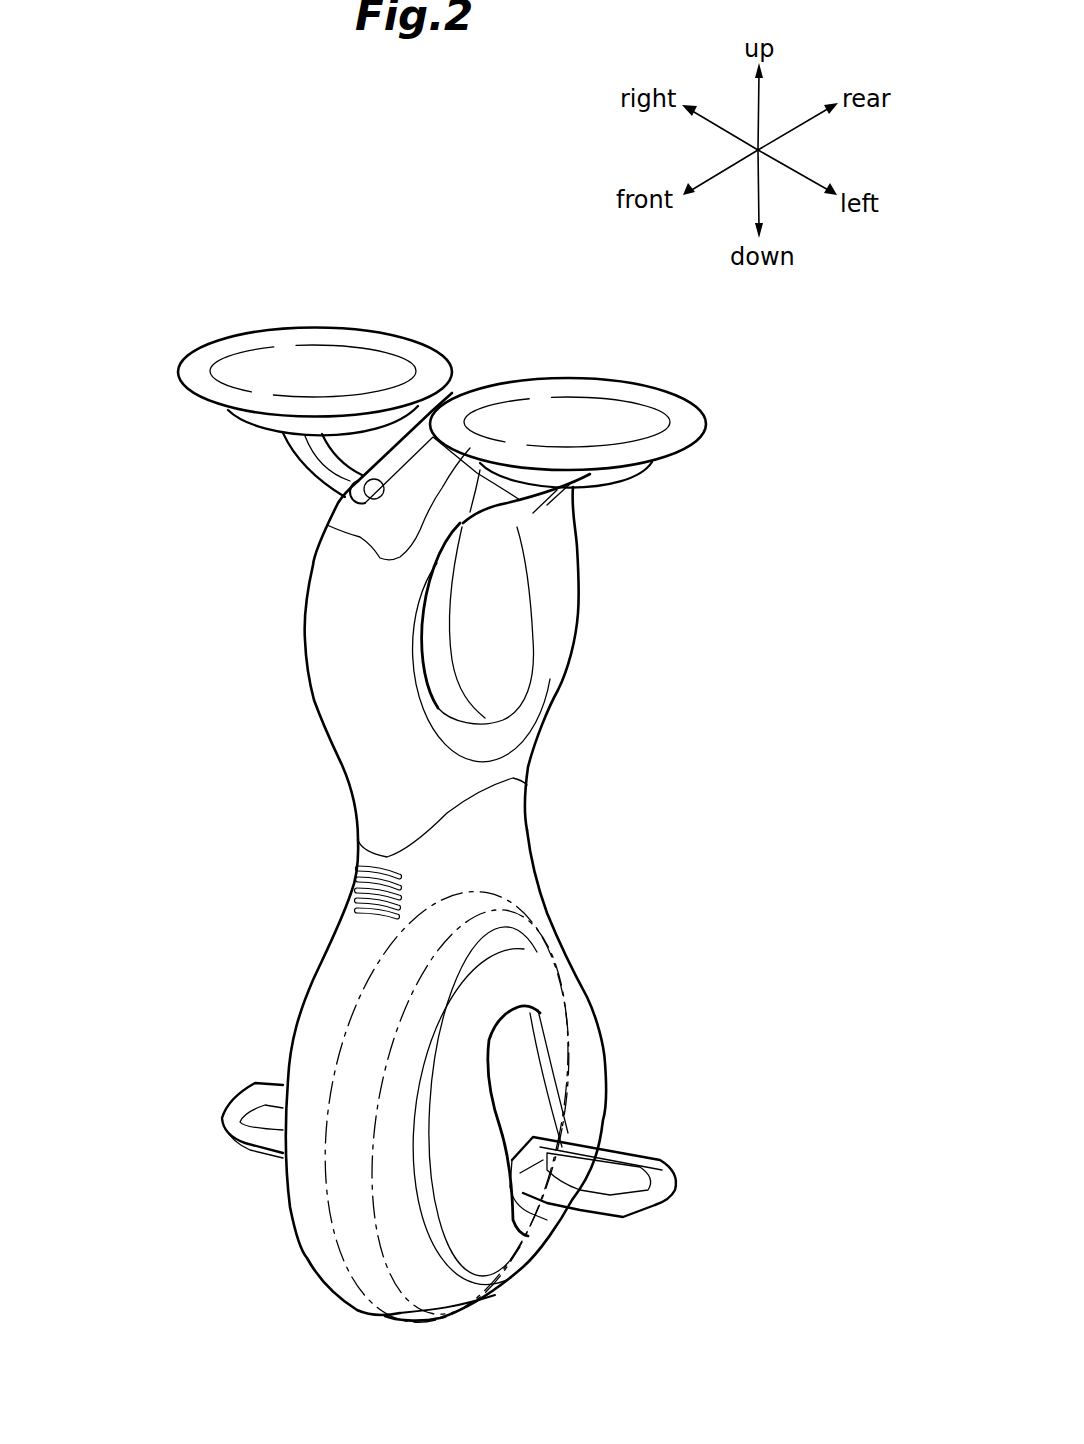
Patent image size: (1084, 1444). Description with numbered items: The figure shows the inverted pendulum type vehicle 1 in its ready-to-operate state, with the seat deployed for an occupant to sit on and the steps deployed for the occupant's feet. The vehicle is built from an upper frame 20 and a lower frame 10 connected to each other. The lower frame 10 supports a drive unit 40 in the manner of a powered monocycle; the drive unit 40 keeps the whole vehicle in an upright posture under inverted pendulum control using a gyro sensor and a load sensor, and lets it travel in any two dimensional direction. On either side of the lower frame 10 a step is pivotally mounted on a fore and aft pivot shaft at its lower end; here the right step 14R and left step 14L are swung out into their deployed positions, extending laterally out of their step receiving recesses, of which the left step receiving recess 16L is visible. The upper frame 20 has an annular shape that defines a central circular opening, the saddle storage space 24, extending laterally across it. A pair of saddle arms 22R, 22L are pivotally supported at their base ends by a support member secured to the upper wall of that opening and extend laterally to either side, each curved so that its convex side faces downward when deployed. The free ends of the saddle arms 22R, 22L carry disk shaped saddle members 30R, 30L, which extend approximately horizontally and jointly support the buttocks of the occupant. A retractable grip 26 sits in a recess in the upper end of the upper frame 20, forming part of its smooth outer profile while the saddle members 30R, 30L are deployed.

The inverted pendulum type vehicle 1 is at (434, 766).
The lower frame 10 is at (407, 1075).
The step 14R is at (230, 1113).
The step 14L is at (668, 1172).
The step receiving recess 16L is at (552, 1083).
The upper frame 20 is at (417, 617).
The saddle arm 22R is at (297, 457).
The saddle arm 22L is at (570, 497).
The saddle storage space 24 is at (497, 653).
The retractable grip 26 is at (418, 433).
The saddle member 30R is at (315, 354).
The saddle member 30L is at (578, 408).
The drive unit 40 is at (458, 1091).